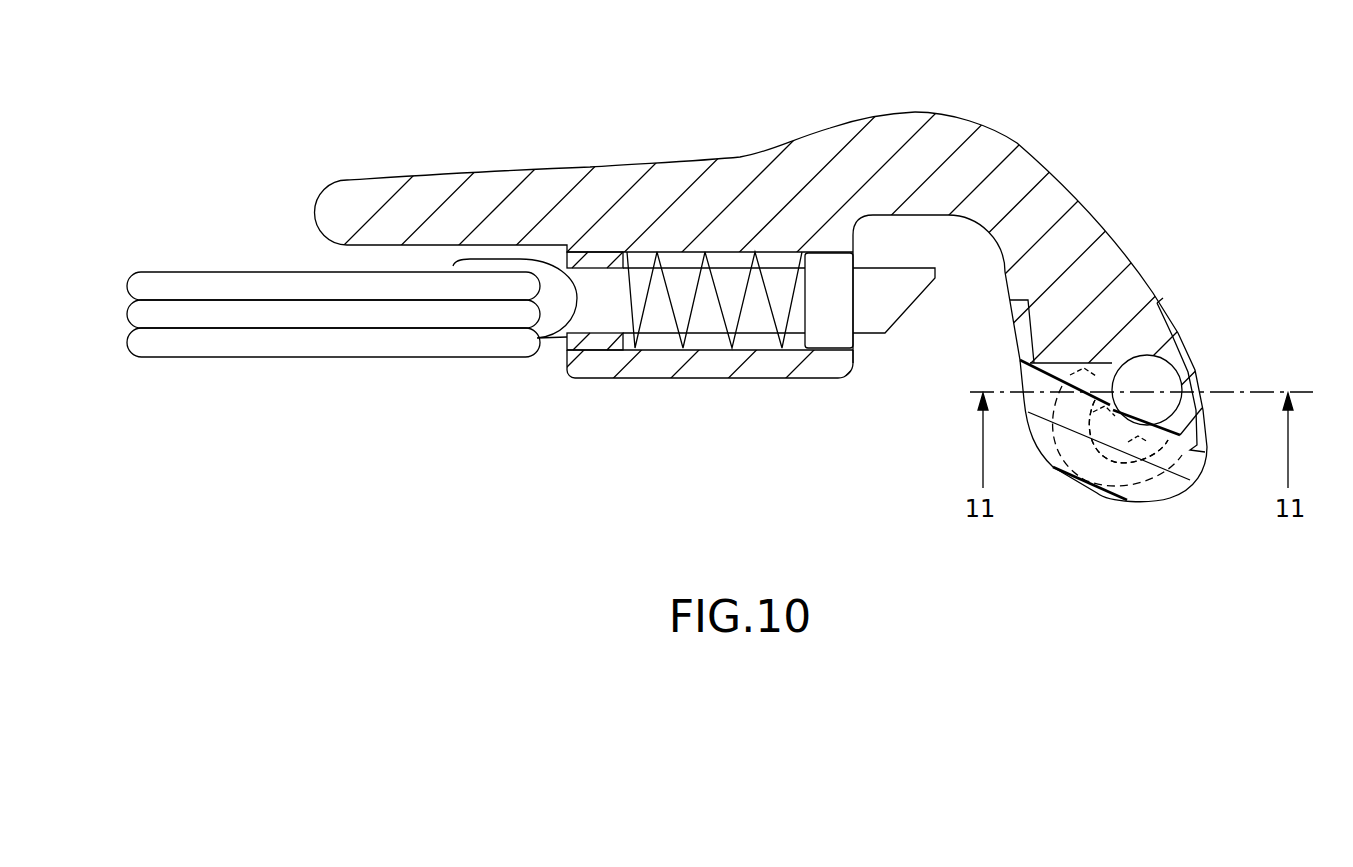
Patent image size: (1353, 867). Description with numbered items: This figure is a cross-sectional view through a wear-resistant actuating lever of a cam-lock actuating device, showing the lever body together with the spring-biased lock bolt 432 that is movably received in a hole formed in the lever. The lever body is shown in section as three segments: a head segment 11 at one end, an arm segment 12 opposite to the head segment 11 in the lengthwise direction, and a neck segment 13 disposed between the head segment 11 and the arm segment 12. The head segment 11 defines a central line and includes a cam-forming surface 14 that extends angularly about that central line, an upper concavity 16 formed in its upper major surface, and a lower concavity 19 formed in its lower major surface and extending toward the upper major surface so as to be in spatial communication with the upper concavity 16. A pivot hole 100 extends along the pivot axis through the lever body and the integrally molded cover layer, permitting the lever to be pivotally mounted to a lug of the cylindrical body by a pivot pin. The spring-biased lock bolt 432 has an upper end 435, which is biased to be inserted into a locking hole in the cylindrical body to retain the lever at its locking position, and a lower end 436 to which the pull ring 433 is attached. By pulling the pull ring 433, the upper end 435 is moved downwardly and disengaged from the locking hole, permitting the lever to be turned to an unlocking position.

The arm segment 12 is at (495, 183).
The neck segment 13 is at (1063, 233).
The pivot hole 100 is at (1182, 333).
The head segment 11 is at (1065, 340).
The upper end 435 is at (882, 305).
The spring-biased lock bolt 432 is at (710, 327).
The lower end 436 is at (555, 315).
The pull ring 433 is at (337, 348).
The cam-forming surface 14 is at (1030, 405).
The upper concavity 16 is at (1147, 473).
The lower concavity 19 is at (1128, 431).